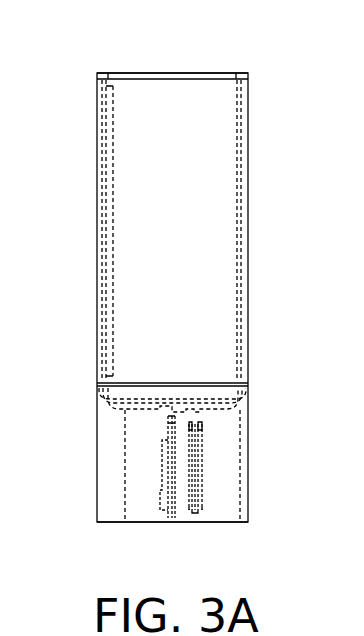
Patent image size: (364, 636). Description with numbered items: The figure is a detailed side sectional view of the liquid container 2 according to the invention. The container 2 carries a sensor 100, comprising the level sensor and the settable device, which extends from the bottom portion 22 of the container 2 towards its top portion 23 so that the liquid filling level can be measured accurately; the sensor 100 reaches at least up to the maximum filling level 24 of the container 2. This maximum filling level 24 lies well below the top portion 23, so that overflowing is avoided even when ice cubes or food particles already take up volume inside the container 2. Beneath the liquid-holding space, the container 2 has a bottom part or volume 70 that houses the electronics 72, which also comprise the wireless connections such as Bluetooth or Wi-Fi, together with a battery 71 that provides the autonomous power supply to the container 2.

The container 2 is at (97, 272).
The bottom portion 22 is at (138, 383).
The top portion 23 is at (118, 73).
The maximum filling level 24 is at (145, 112).
The bottom part or volume 70 is at (97, 462).
The battery 71 is at (195, 512).
The electronics 72 is at (162, 503).
The sensor 100 is at (97, 170).